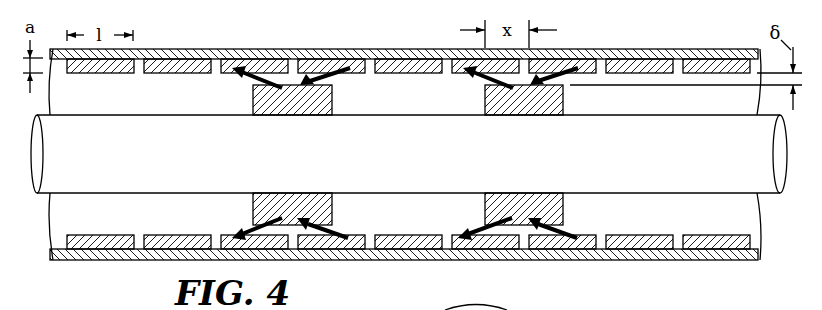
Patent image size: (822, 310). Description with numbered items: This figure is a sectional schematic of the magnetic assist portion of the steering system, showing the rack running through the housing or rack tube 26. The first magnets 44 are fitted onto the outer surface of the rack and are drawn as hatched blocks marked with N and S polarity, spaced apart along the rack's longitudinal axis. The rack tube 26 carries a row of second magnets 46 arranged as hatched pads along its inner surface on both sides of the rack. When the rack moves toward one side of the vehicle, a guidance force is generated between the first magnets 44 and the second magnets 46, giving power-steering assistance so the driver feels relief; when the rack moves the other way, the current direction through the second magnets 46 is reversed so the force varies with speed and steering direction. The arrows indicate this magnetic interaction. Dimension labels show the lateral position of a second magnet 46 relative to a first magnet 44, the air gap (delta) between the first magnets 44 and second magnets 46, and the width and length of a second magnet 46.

The first magnet 44 is at (254, 100).
The rack tube 26 is at (688, 53).
The second magnet 46 is at (728, 63).